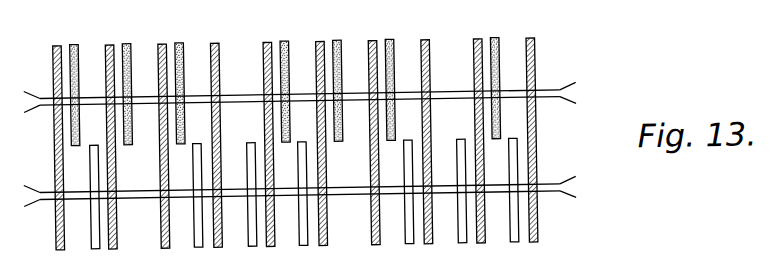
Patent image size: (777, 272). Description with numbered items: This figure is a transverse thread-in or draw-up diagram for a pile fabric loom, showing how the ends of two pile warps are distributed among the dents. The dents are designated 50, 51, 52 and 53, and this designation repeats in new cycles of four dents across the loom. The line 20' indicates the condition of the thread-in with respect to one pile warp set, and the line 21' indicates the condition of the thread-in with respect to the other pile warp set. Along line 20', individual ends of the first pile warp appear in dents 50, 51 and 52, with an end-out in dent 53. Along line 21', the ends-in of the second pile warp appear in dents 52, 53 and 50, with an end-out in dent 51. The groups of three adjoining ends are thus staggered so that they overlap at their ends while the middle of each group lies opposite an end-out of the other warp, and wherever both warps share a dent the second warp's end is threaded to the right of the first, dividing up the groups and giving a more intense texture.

The dent 50 is at (87, 52).
The dent 51 is at (139, 52).
The dent 52 is at (190, 52).
The dent 53 is at (237, 52).
The line indicating thread-in condition of pile warp set 20 20' is at (311, 77).
The line indicating thread-in condition of pile warp set 21 21' is at (310, 175).